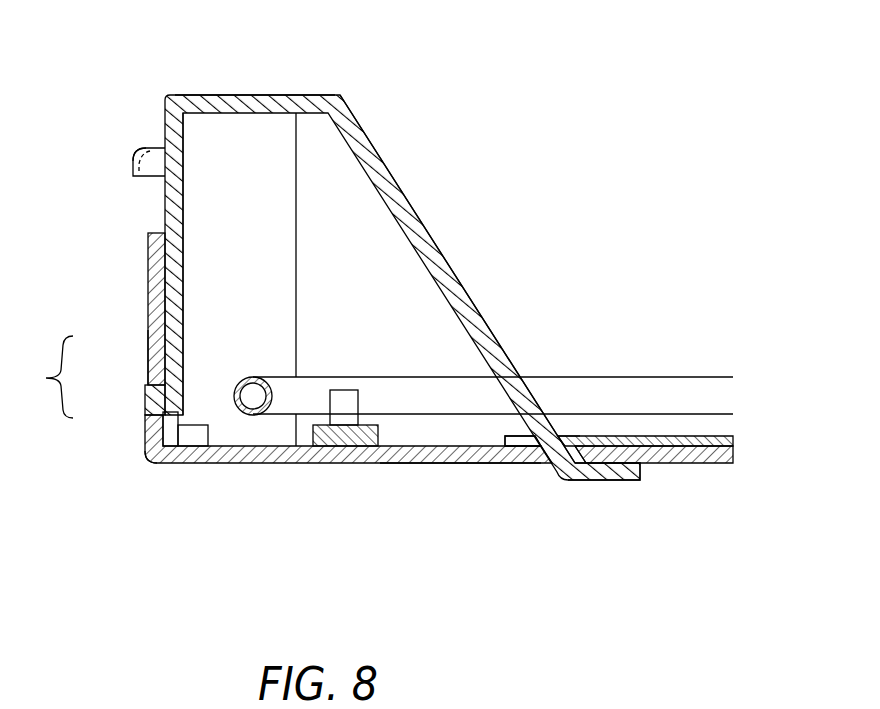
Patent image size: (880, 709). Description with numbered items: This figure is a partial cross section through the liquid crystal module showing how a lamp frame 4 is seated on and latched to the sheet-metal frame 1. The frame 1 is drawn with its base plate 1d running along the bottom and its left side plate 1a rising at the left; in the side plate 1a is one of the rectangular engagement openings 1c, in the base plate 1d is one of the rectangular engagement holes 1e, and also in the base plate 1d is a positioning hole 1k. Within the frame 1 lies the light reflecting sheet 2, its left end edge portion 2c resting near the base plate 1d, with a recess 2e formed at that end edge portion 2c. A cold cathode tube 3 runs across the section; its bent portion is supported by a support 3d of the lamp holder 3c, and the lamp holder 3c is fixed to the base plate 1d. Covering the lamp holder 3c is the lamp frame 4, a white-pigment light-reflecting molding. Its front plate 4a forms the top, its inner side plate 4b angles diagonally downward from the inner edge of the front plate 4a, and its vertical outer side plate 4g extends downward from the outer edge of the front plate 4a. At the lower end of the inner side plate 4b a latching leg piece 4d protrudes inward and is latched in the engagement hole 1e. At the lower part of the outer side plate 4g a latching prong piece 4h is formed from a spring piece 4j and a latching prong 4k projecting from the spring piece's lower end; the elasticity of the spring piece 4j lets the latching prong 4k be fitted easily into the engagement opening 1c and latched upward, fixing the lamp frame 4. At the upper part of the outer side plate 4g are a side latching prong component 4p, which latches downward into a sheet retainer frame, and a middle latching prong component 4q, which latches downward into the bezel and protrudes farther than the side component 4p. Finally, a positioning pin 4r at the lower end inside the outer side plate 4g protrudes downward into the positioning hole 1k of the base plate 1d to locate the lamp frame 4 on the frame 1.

The frame 1 is at (236, 470).
The left side plate 1a is at (147, 279).
The engagement opening 1c is at (150, 412).
The base plate 1d is at (434, 466).
The engagement hole 1e is at (540, 466).
The positioning hole 1k is at (156, 466).
The light reflecting sheet 2 is at (673, 436).
The left end edge portion 2c is at (508, 437).
The recess 2e is at (565, 435).
The cold cathode tube 3 is at (633, 375).
The lamp holder 3c is at (348, 448).
The support 3d is at (344, 396).
The lamp frame 4 is at (412, 152).
The front plate 4a is at (264, 93).
The inner side plate 4b is at (438, 242).
The latching leg piece 4d is at (611, 483).
The outer side plate 4g is at (185, 244).
The latching prong piece 4h is at (41, 377).
The spring piece 4j is at (147, 356).
The latching prong 4k is at (147, 393).
The side latching prong component 4p is at (132, 174).
The middle latching prong component 4q is at (136, 152).
The positioning pin 4r is at (190, 468).